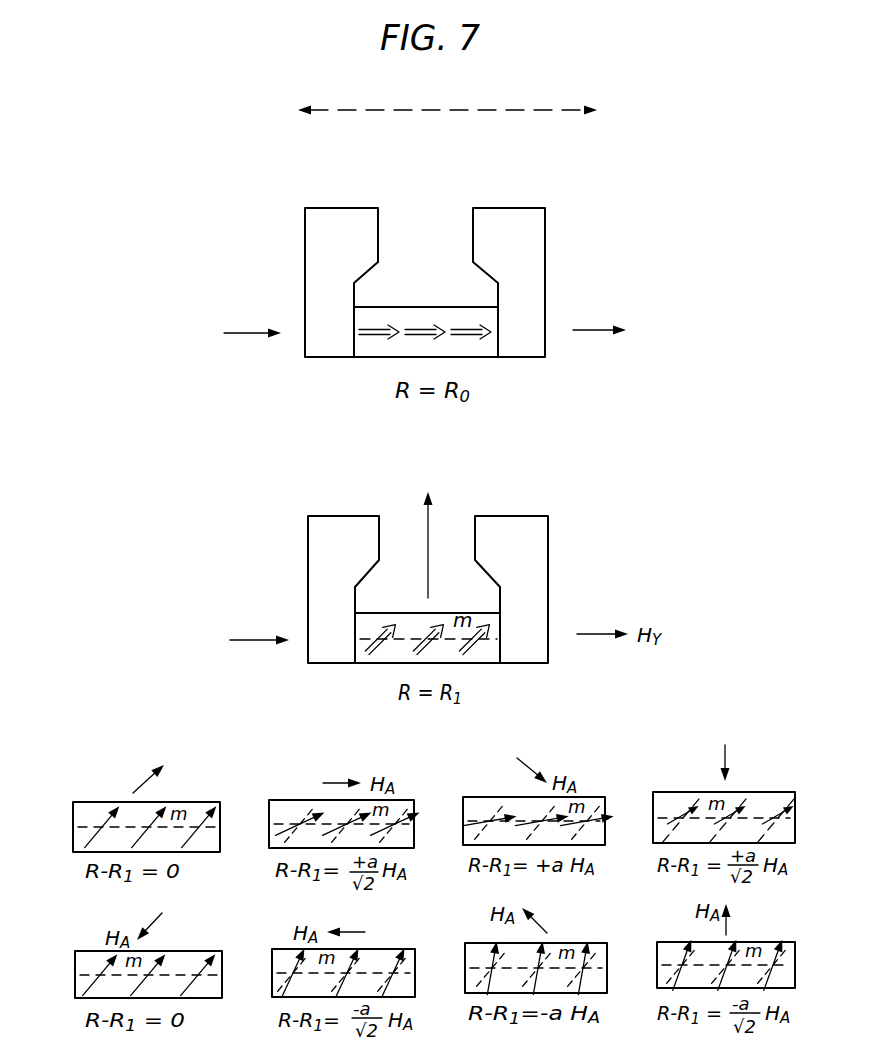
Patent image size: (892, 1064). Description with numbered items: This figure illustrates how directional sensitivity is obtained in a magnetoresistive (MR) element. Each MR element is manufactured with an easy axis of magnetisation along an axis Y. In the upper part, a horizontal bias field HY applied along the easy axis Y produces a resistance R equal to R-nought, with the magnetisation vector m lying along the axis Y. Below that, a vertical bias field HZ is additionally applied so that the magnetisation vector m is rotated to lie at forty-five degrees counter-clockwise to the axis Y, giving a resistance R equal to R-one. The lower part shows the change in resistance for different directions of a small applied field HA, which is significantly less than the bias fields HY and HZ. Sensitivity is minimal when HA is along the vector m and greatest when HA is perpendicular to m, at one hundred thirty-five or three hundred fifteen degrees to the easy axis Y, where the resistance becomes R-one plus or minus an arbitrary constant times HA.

The magnetisation vector m is at (438, 332).
The easy axis of magnetisation Y is at (457, 111).
The horizontal bias field HY is at (616, 332).
The vertical bias field HZ is at (433, 532).
The applied field HA is at (162, 768).